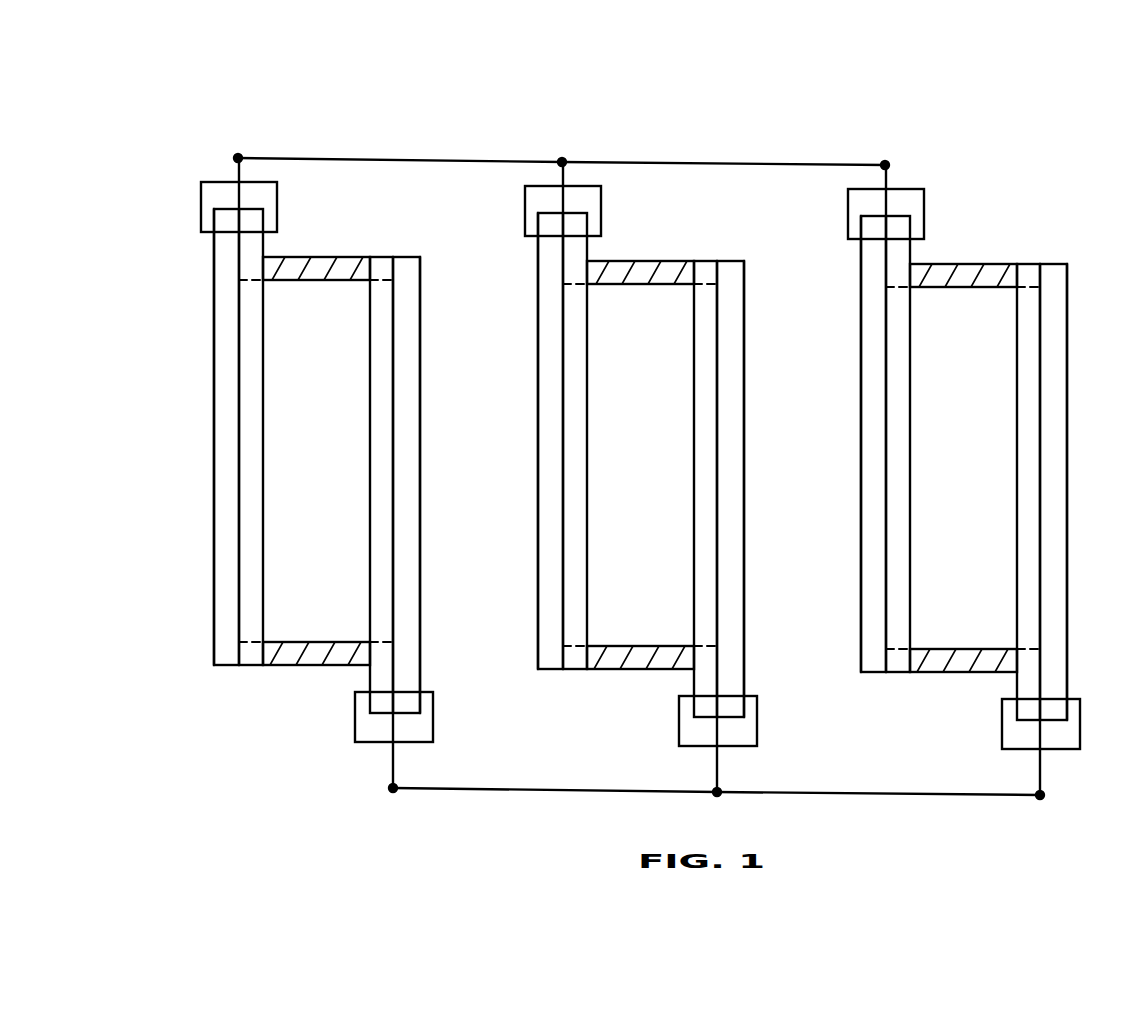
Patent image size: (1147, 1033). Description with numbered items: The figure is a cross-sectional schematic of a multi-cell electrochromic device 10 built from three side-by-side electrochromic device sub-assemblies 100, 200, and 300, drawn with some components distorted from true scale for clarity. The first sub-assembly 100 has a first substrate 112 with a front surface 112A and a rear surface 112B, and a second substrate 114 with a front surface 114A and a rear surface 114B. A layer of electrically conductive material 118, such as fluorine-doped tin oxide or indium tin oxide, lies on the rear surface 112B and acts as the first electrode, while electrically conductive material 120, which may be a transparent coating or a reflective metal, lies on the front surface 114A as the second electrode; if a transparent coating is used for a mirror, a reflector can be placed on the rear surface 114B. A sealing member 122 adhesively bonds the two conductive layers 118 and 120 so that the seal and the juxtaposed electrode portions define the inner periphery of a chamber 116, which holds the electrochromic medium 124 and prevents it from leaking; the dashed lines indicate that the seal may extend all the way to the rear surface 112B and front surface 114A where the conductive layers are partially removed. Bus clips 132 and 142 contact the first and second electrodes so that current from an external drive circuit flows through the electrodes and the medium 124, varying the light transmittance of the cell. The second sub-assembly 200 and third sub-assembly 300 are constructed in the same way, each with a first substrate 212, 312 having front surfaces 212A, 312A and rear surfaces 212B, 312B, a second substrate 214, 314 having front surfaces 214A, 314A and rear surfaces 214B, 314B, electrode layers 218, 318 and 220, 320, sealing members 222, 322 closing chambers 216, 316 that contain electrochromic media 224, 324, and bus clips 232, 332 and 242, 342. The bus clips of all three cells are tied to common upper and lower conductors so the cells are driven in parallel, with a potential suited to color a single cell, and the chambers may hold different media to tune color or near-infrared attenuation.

The multi-cell electrochromic device 10 is at (1064, 74).
The electrochromic device sub-assembly 100 is at (266, 122).
The electrochromic device sub-assembly 200 is at (651, 437).
The electrochromic device sub-assembly 300 is at (971, 440).
The first substrate 112 is at (228, 435).
The first substrate 212 is at (538, 441).
The first substrate 312 is at (861, 444).
The front surface 112A is at (213, 568).
The front surface 212A is at (509, 441).
The front surface 312A is at (832, 444).
The rear surface 112B is at (237, 592).
The rear surface 212B is at (524, 441).
The rear surface 312B is at (847, 444).
The second substrate 114 is at (407, 428).
The second substrate 214 is at (689, 489).
The second substrate 314 is at (1012, 492).
The front surface 114A is at (395, 565).
The front surface 214A is at (761, 489).
The front surface 314A is at (1084, 492).
The rear surface 114B is at (418, 542).
The rear surface 214B is at (774, 489).
The rear surface 314B is at (1097, 492).
The chamber 116 is at (330, 477).
The chamber 216 is at (640, 465).
The chamber 316 is at (963, 468).
The electrically conductive material 118 is at (250, 410).
The electrically conductive material 218 is at (526, 415).
The electrically conductive material 318 is at (849, 418).
The electrically conductive material 120 is at (382, 400).
The electrically conductive material 220 is at (679, 526).
The electrically conductive material 320 is at (1002, 529).
The sealing member 122 is at (325, 257).
The sealing member 222 is at (640, 481).
The sealing member 322 is at (963, 484).
The electrochromic medium 124 is at (293, 622).
The electrochromic medium 224 is at (584, 670).
The electrochromic medium 324 is at (907, 673).
The bus clip 132 is at (201, 209).
The bus clip 232 is at (536, 211).
The bus clip 332 is at (859, 214).
The bus clip 142 is at (433, 715).
The bus clip 242 is at (754, 721).
The bus clip 342 is at (1074, 724).